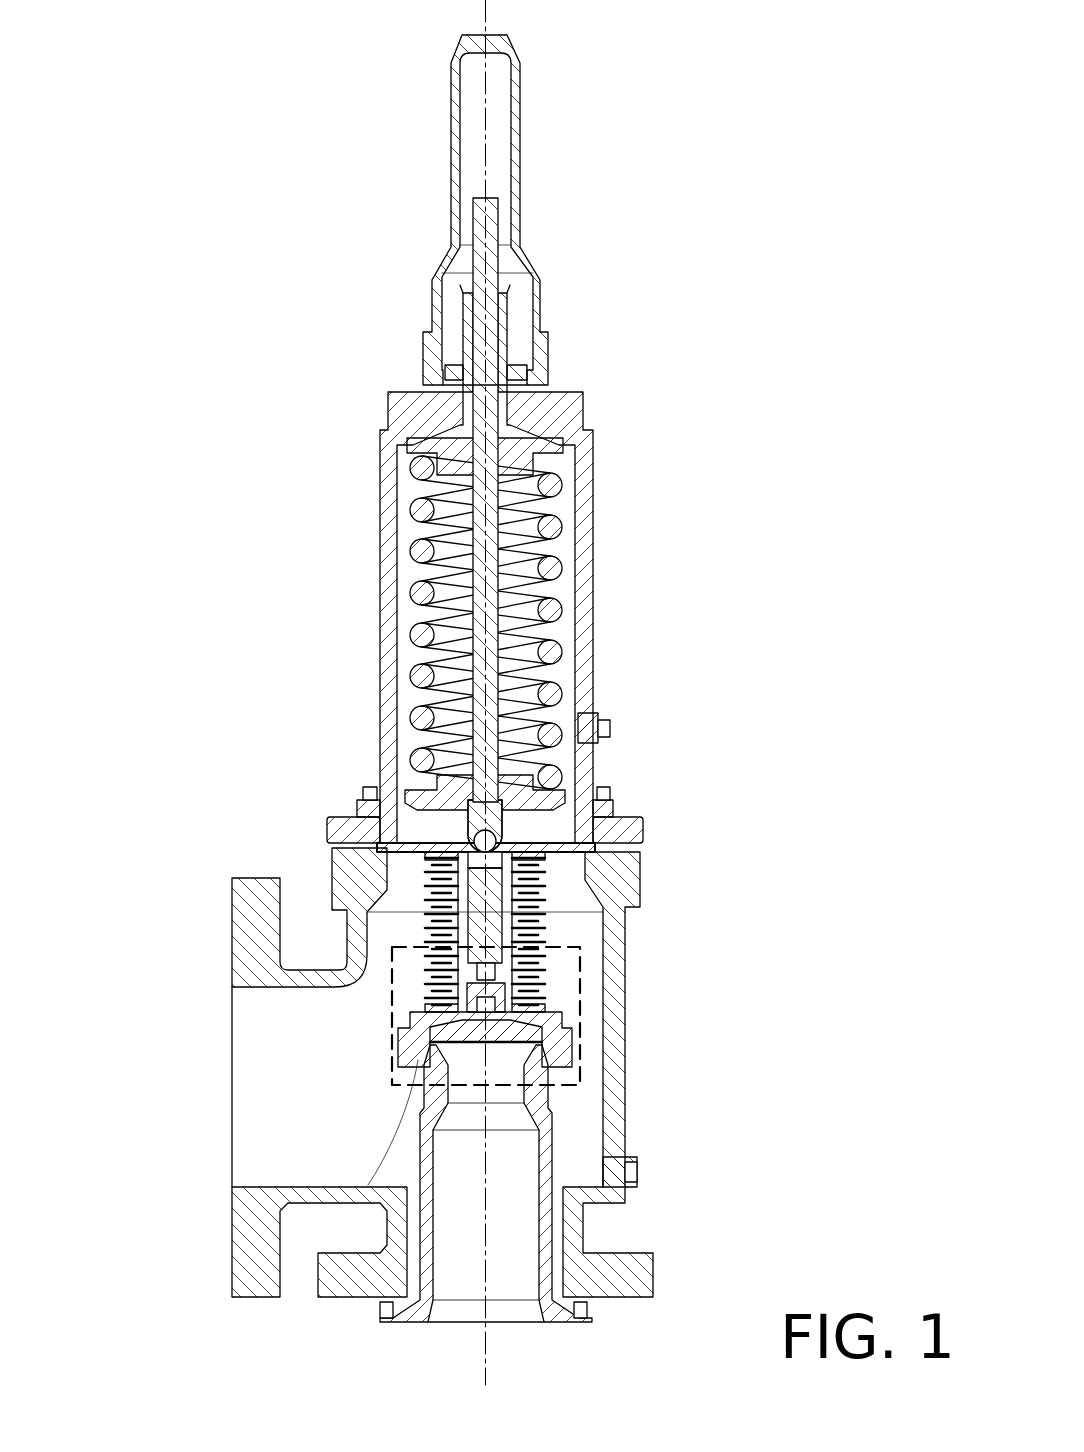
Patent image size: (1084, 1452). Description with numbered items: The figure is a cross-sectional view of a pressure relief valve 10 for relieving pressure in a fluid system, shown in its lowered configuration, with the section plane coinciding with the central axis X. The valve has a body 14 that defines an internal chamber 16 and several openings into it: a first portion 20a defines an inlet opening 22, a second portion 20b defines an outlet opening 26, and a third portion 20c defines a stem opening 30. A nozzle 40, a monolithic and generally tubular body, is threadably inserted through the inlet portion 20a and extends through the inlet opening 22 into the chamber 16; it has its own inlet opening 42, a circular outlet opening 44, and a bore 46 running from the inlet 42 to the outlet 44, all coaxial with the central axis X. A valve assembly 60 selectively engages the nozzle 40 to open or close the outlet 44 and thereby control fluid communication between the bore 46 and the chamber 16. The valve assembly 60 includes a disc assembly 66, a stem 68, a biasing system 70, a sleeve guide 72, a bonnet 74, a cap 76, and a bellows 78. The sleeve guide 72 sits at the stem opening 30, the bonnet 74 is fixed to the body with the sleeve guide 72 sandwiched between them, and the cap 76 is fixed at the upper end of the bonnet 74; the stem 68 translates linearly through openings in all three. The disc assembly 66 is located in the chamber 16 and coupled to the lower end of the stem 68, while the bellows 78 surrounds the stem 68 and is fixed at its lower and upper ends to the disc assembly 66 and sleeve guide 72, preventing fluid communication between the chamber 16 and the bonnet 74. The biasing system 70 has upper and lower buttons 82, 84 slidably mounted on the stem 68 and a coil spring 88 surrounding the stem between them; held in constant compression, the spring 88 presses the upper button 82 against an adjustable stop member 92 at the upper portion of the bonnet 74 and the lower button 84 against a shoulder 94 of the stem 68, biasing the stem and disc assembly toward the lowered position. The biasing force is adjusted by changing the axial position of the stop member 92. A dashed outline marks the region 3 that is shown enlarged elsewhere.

The pressure relief valve 10 is at (435, 692).
The body 14 is at (416, 1108).
The chamber 16 is at (567, 1108).
The first portion 20a is at (650, 1273).
The second portion 20b is at (255, 1297).
The third portion 20c is at (640, 873).
The inlet opening 22 is at (557, 1297).
The outlet opening 26 is at (212, 1112).
The stem opening 30 is at (582, 838).
The enlarged view region 3 is at (580, 978).
The nozzle 40 is at (498, 1212).
The inlet opening 42 is at (455, 1332).
The outlet opening 44 is at (532, 1032).
The bore 46 is at (507, 1222).
The valve assembly 60 is at (413, 443).
The disc assembly 66 is at (385, 1050).
The stem 68 is at (570, 629).
The biasing system 70 is at (462, 619).
The sleeve guide 72 is at (385, 840).
The bonnet 74 is at (380, 630).
The cap 76 is at (450, 108).
The bellows 78 is at (580, 922).
The upper button 82 is at (565, 445).
The lower button 84 is at (440, 790).
The coil spring 88 is at (560, 655).
The adjustable stop member 92 is at (520, 321).
The shoulder 94 is at (468, 814).
The central axis X is at (487, 1360).